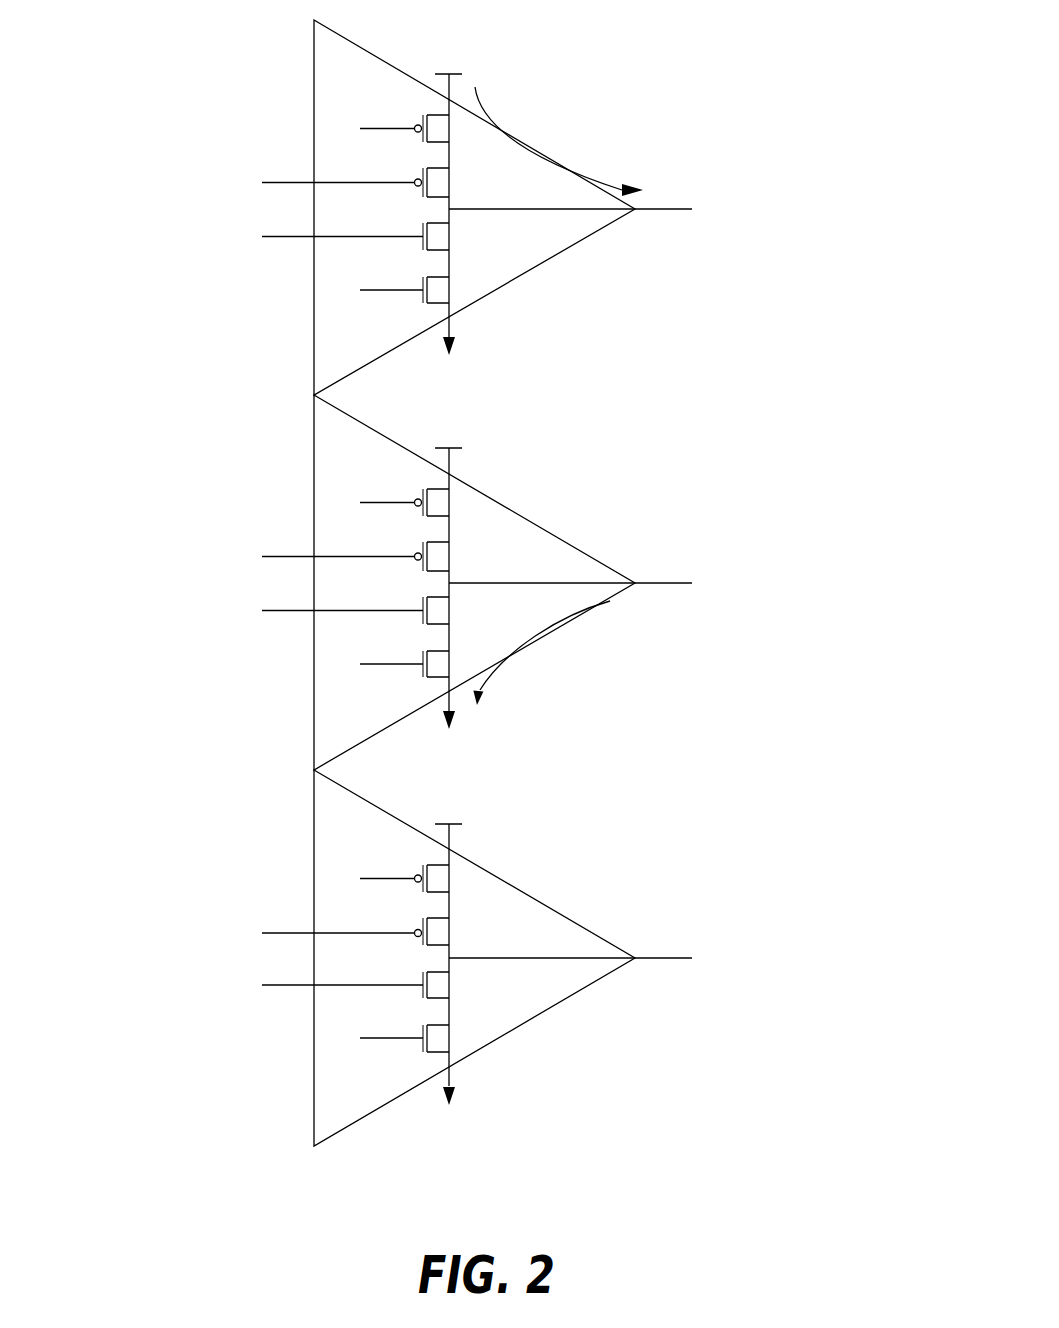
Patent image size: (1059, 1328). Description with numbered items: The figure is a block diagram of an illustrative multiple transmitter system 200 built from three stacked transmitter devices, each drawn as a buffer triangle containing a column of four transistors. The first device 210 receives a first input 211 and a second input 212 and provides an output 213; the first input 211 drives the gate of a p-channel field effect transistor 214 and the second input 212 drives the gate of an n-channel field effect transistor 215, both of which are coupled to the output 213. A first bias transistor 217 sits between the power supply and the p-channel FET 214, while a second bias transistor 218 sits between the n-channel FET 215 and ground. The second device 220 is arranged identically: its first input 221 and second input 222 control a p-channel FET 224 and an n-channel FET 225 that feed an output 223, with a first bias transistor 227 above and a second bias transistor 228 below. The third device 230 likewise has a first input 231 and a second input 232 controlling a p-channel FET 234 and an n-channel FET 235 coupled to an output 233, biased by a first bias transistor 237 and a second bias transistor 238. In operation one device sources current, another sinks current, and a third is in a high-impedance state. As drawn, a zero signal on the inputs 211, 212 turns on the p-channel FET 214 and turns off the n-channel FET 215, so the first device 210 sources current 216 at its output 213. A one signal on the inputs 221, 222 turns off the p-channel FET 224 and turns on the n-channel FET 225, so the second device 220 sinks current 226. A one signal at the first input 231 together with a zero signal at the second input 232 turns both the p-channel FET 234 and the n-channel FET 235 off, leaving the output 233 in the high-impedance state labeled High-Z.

The multiple transmitter system 200 is at (138, 32).
The first device 210 is at (314, 60).
The first input 211 is at (262, 182).
The second input 212 is at (262, 236).
The output 213 is at (663, 209).
The p-channel field effect transistor 214 is at (473, 183).
The n-channel field effect transistor 215 is at (473, 237).
The sourced current 216 is at (612, 192).
The first bias transistor 217 is at (418, 94).
The second bias transistor 218 is at (470, 304).
The second device 220 is at (426, 580).
The first input 221 is at (290, 535).
The second input 222 is at (294, 589).
The output 223 is at (599, 562).
The p-channel FET 224 is at (479, 557).
The n-channel FET 225 is at (482, 611).
The sunk current 226 is at (587, 653).
The first bias transistor 227 is at (446, 494).
The second bias transistor 228 is at (397, 685).
The third device 230 is at (426, 958).
The first input 231 is at (290, 911).
The second input 232 is at (294, 964).
The output 233 is at (599, 954).
The p-channel FET 234 is at (475, 934).
The n-channel FET 235 is at (478, 985).
The first bias transistor 237 is at (447, 872).
The second bias transistor 238 is at (449, 1043).